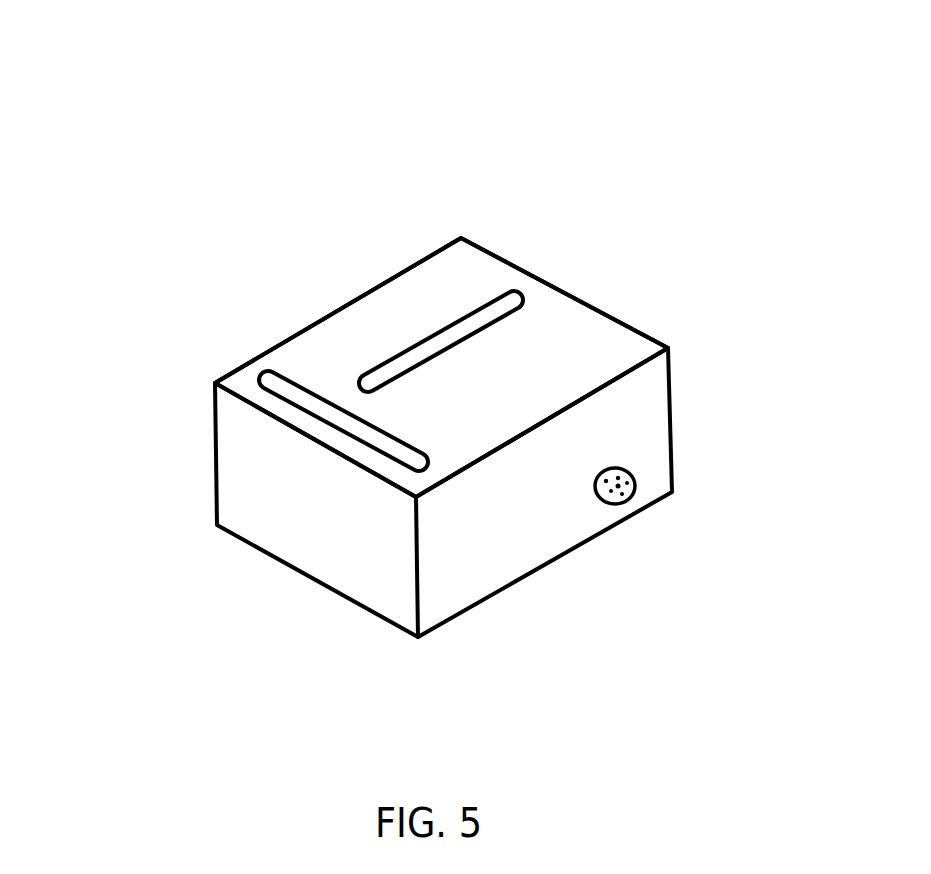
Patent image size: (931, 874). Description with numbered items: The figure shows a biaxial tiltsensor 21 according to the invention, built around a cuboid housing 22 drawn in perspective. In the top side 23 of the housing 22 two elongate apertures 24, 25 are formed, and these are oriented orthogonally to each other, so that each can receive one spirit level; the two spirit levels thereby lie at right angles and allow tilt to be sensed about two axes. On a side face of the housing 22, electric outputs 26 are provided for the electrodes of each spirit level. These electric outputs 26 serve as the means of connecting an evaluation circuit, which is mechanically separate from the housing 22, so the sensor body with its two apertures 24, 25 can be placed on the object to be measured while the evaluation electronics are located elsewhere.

The biaxial tiltsensor 21 is at (222, 210).
The cuboid housing 22 is at (630, 402).
The top side 23 is at (441, 268).
The elongate aperture 24 is at (298, 395).
The elongate aperture 25 is at (497, 312).
The electric outputs 26 is at (616, 502).